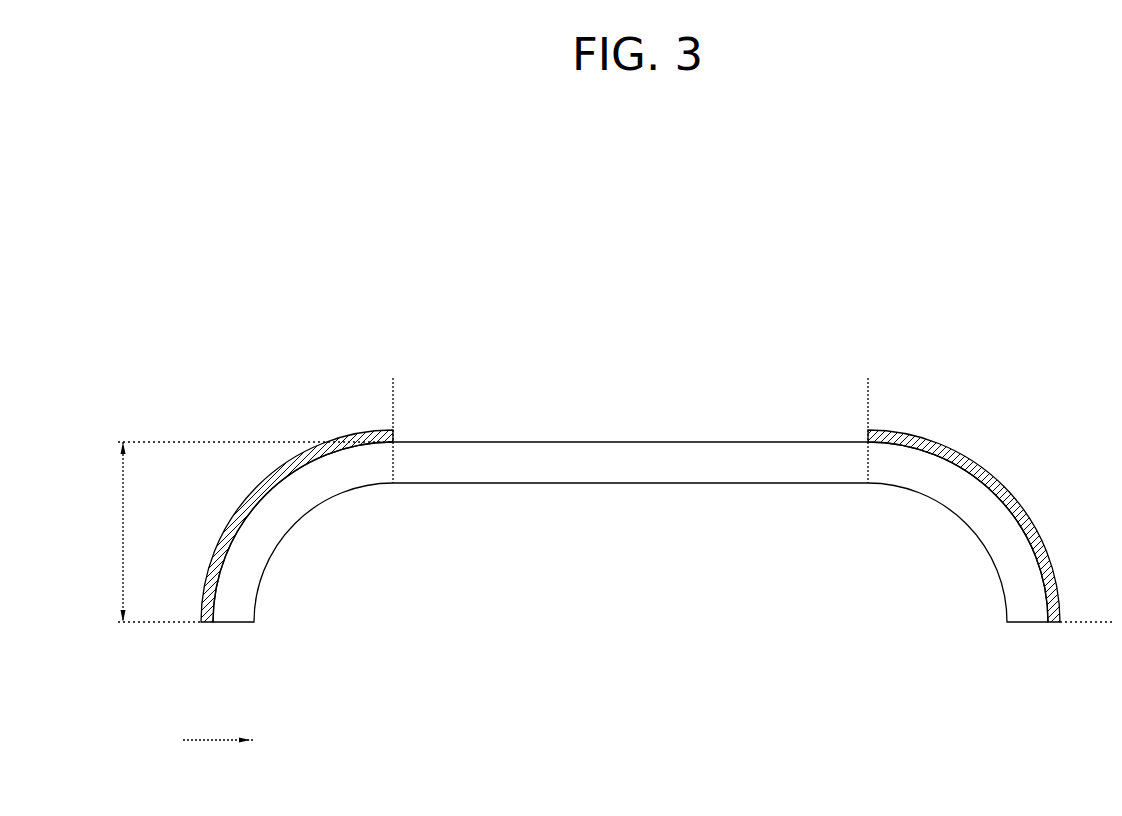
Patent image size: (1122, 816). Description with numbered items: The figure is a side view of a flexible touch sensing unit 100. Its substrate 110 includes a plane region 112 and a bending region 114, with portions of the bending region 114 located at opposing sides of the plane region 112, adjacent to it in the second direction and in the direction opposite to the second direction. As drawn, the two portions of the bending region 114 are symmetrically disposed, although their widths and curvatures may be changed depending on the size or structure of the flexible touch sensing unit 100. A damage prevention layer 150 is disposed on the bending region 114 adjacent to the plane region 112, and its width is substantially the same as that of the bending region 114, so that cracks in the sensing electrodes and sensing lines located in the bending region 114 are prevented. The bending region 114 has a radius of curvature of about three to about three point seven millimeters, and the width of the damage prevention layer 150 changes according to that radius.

The flexible touch sensing unit 100 is at (652, 263).
The substrate 110 is at (640, 468).
The plane region 112 is at (868, 388).
The bending region 114 is at (161, 622).
The damage prevention layer 150 is at (210, 622).